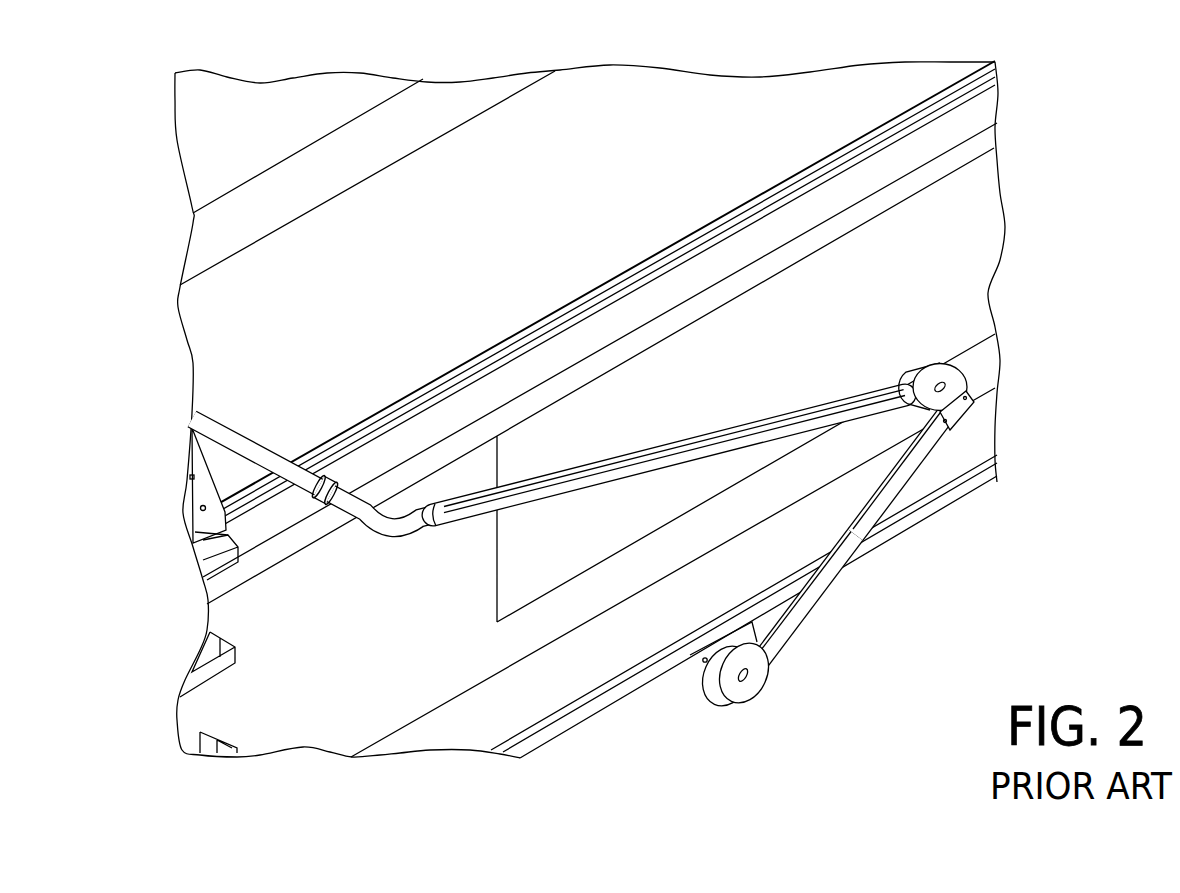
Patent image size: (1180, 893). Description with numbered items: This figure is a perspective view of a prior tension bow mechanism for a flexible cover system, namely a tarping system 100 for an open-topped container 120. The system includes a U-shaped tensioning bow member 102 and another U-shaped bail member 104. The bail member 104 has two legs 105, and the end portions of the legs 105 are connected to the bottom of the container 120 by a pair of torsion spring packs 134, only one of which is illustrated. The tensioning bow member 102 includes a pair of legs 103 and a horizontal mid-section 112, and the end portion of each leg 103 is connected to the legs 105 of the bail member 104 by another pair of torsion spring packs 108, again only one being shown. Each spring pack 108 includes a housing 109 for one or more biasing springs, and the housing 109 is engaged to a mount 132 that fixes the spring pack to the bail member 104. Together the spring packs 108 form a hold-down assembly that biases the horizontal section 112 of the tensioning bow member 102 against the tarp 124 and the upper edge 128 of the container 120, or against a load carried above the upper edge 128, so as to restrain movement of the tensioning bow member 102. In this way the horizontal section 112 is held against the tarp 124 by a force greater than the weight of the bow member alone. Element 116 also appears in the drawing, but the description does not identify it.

The tarping system 100 is at (737, 716).
The U-shaped tensioning bow member 102 is at (668, 442).
The legs of the tensioning bow member 103 is at (768, 415).
The U-shaped bail member 104 is at (812, 597).
The legs of the bail member 105 is at (877, 497).
The torsion spring packs 108 is at (928, 362).
The housing 109 is at (955, 382).
The horizontal mid-section 112 is at (227, 427).
The cross members 116 is at (213, 720).
The open-topped container 120 is at (558, 738).
The tarp 124 is at (813, 97).
The upper edge of the container 128 is at (465, 385).
The mount 132 is at (967, 413).
The torsion spring packs 134 is at (757, 680).